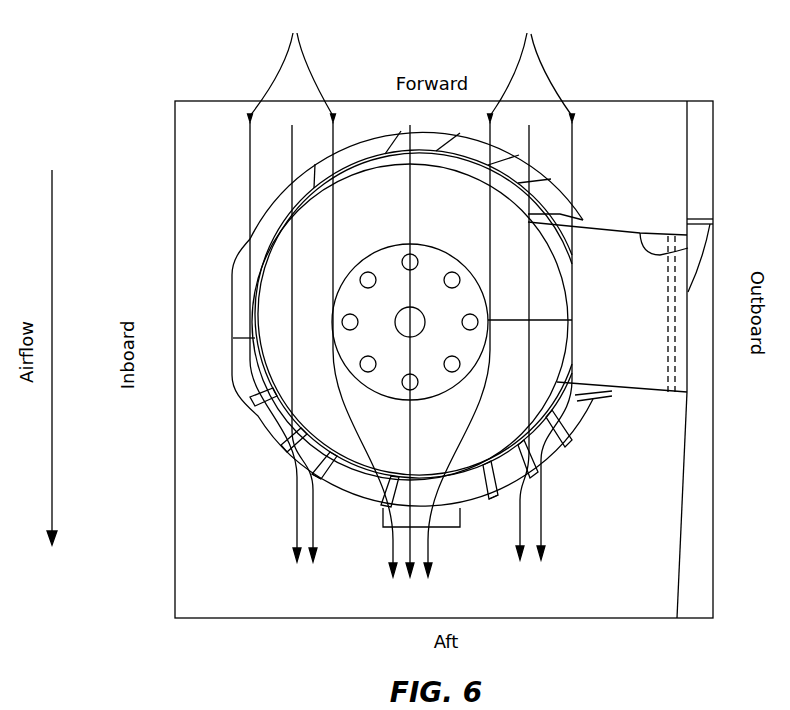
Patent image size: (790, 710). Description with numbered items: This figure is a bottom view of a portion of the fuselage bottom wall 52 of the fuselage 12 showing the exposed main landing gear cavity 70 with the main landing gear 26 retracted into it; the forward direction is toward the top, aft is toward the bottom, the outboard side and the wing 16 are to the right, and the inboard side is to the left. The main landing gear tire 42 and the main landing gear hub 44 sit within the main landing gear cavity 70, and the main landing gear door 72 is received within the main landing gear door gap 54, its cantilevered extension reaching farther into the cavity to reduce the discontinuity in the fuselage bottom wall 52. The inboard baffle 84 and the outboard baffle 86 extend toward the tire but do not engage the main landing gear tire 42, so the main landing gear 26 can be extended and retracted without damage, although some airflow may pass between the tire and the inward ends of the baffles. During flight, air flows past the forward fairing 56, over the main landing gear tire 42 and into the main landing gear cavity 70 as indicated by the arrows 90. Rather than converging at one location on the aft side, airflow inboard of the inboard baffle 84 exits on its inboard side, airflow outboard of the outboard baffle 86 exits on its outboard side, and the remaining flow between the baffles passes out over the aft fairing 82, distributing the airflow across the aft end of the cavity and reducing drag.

The fuselage 12 is at (403, 373).
The fuselage bottom wall 52 is at (205, 572).
The wing 16 is at (697, 122).
The main landing gear 26 is at (359, 310).
The forward fairing 56 is at (287, 200).
The main landing gear cavity 70 is at (240, 200).
The main landing gear hub 44 is at (350, 310).
The main landing gear tire 42 is at (283, 388).
The main landing gear door gap 54 is at (688, 248).
The main landing gear door 72 is at (650, 332).
The aft fairing 82 is at (573, 448).
The inboard baffle 84 is at (333, 488).
The outboard baffle 86 is at (495, 480).
The arrows 90 is at (292, 118).